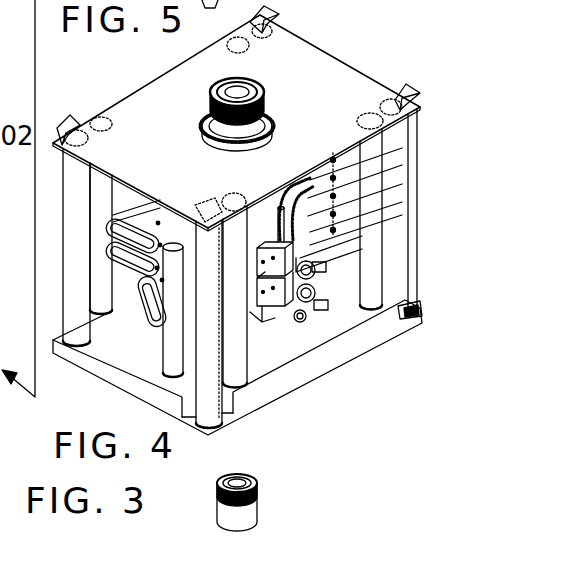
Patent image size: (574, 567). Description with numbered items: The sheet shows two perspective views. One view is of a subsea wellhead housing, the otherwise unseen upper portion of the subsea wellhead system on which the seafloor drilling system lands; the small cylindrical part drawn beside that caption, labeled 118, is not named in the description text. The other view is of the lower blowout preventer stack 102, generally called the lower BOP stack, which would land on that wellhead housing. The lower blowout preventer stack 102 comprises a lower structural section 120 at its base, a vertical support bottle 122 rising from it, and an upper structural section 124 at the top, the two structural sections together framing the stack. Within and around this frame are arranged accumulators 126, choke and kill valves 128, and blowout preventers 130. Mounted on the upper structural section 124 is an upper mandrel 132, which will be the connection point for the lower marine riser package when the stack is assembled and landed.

In FIG. 4, the lower blowout preventer stack 102 is at (418, 141).
In FIG. 3, the bushing 118 is at (262, 489).
In FIG. 4, the lower structural section 120 is at (333, 350).
In FIG. 4, the vertical support bottle 122 is at (400, 288).
In FIG. 4, the upper structural section 124 is at (272, 55).
In FIG. 4, the accumulators 126 is at (370, 270).
In FIG. 4, the choke and kill valves 128 is at (352, 252).
In FIG. 4, the blowout preventers 130 is at (320, 215).
In FIG. 4, the upper mandrel 132 is at (265, 90).